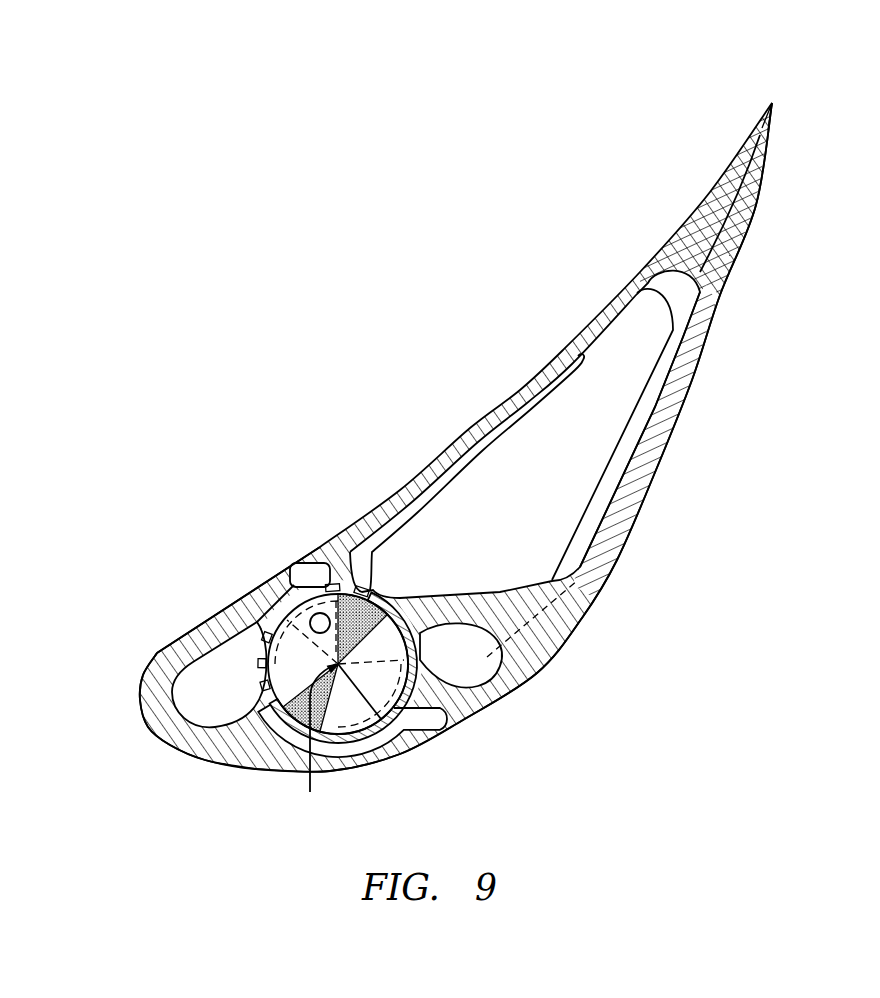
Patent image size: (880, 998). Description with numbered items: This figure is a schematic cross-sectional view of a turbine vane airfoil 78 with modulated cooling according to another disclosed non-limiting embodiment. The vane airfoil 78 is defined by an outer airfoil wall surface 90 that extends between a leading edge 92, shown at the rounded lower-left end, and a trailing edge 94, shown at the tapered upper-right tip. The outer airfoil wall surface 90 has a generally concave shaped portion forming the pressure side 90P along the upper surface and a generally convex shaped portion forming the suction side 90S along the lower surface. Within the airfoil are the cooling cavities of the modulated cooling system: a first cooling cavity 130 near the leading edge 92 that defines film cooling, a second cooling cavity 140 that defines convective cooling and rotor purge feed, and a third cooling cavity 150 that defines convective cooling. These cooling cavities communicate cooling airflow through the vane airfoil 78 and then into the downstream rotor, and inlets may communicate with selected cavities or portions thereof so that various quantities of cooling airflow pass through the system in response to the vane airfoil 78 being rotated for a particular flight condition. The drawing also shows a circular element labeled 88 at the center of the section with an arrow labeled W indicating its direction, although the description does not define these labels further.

The trailing edge 94 is at (776, 99).
The outer airfoil wall surface 90 is at (686, 410).
The pressure side 90P is at (512, 396).
The suction side 90S is at (552, 665).
The vane airfoil 78 is at (627, 562).
The second cooling cavity 140 is at (347, 585).
The first cooling cavity 130 is at (183, 688).
The leading edge 92 is at (138, 712).
The third cooling cavity 150 is at (480, 672).
The spindle 88 is at (410, 727).
The rotation direction W is at (318, 741).